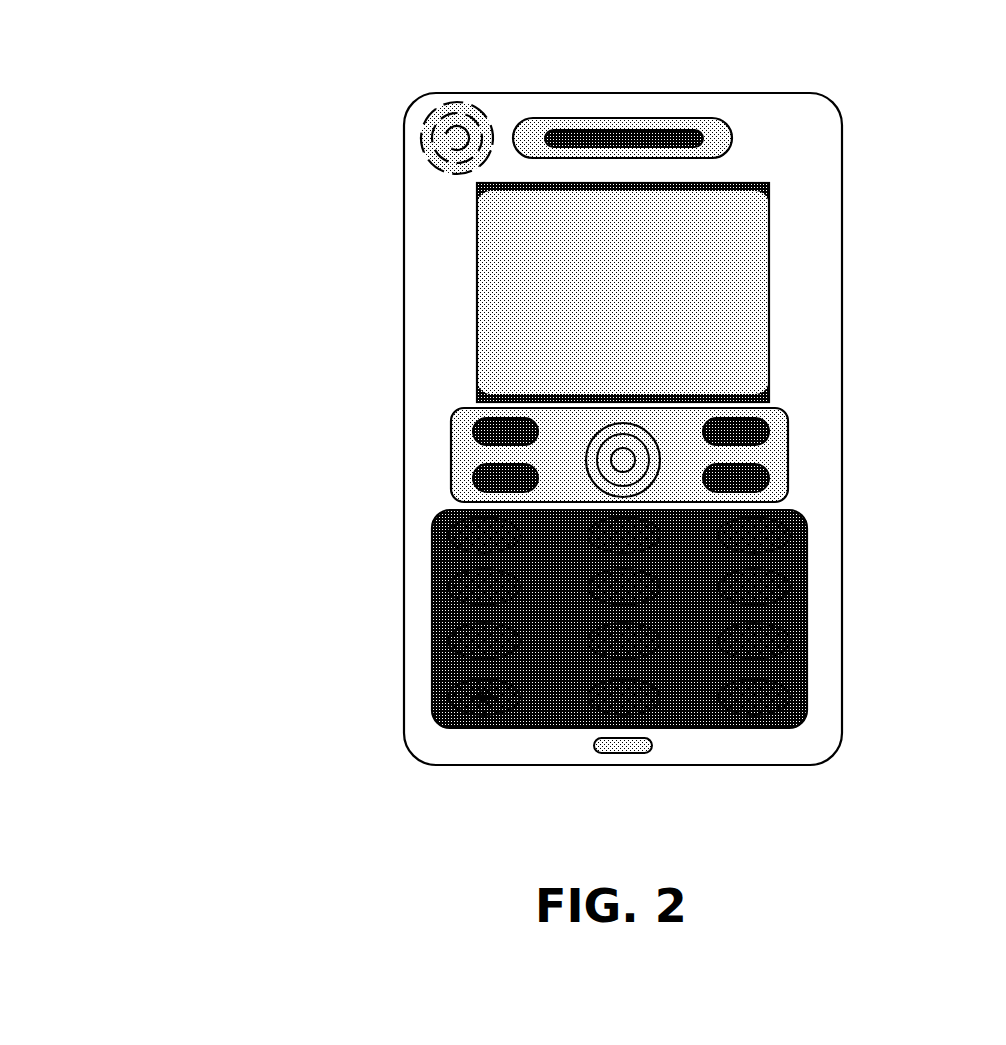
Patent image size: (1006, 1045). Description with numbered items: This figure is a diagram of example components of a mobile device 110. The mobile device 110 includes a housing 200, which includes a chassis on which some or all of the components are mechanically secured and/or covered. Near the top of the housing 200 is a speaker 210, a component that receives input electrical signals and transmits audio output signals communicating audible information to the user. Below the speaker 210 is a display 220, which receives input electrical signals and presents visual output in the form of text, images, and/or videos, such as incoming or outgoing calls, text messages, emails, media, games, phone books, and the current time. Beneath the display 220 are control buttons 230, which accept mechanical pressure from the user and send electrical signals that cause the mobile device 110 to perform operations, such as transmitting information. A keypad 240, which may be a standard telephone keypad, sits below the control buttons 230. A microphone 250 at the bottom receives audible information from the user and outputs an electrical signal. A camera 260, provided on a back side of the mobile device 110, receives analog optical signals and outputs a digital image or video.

The mobile device 110 is at (143, 82).
The housing 200 is at (404, 428).
The speaker 210 is at (623, 120).
The display 220 is at (769, 293).
The control buttons 230 is at (788, 455).
The keypad 240 is at (807, 619).
The microphone 250 is at (624, 753).
The camera 260 is at (466, 113).